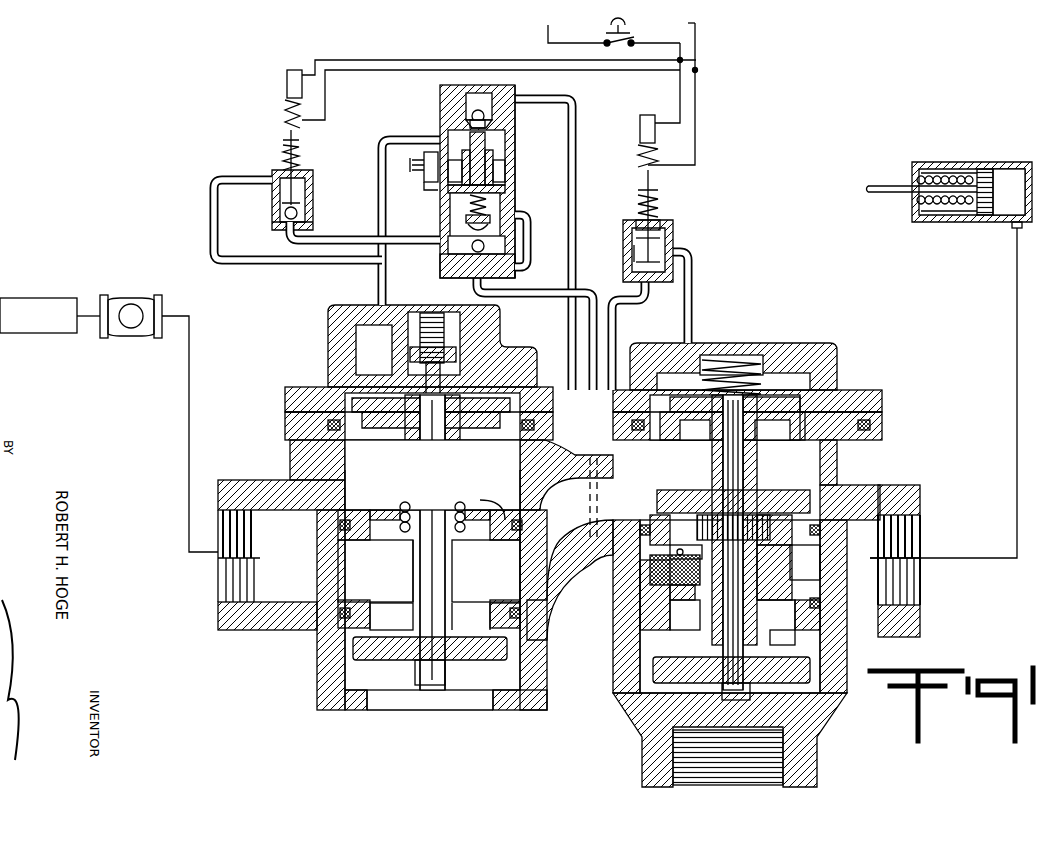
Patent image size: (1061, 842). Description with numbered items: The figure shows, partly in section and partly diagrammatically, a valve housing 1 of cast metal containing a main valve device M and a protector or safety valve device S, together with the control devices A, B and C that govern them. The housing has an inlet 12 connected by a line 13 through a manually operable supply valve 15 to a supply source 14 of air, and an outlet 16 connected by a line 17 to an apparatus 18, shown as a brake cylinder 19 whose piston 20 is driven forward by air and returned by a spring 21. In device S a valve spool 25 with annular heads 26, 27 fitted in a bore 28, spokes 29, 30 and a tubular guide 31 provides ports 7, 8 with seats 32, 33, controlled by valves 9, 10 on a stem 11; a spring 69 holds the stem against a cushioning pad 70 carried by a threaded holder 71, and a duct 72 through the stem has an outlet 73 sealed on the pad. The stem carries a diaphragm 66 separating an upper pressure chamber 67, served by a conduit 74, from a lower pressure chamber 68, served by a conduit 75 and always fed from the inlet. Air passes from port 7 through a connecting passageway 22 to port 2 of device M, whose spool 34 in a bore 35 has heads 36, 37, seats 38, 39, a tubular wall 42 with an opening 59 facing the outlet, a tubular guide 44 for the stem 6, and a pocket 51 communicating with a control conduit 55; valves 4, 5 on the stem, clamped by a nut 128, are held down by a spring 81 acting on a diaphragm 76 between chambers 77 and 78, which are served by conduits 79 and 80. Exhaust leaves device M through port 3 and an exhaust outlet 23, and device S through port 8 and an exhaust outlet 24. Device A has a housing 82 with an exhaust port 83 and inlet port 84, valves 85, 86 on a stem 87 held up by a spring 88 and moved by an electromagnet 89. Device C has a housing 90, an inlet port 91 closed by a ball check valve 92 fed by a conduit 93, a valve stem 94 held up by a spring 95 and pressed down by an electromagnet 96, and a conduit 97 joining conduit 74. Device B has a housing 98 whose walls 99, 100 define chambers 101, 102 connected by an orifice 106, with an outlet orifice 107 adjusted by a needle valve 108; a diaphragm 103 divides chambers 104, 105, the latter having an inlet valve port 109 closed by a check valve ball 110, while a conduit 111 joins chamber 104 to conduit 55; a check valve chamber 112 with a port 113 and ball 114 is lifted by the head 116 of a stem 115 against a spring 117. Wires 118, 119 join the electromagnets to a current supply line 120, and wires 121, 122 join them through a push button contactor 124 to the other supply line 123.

The valve housing 1 is at (592, 620).
The upper valve port 2 is at (743, 522).
The lower valve port 3 is at (780, 630).
The upper valve 4 is at (800, 495).
The lower valve 5 is at (775, 690).
The stem 6 is at (734, 542).
The upper port 7 is at (500, 512).
The lower port 8 is at (482, 612).
The upper valve 9 is at (500, 477).
The lower valve 10 is at (510, 660).
The stem 11 is at (430, 542).
The inlet 12 is at (232, 583).
The line 13 is at (188, 478).
The supply source 14 is at (50, 315).
The supply valve 15 is at (128, 300).
The outlet 16 is at (905, 582).
The line 17 is at (1017, 500).
The apparatus 18 is at (966, 222).
The brake cylinder 19 is at (1010, 170).
The piston 20 is at (985, 170).
The spring 21 is at (955, 170).
The connecting passageway 22 is at (590, 528).
The exhaust outlet 23 is at (773, 780).
The exhaust outlet 24 is at (480, 710).
The valve spool 25 is at (400, 561).
The annular head 26 is at (487, 556).
The annular head 27 is at (505, 605).
The bore 28 is at (343, 577).
The spokes 29 is at (483, 540).
The spokes 30 is at (468, 605).
The tubular guide 31 is at (410, 577).
The annular valve seat 32 is at (419, 517).
The annular valve seat 33 is at (372, 622).
The valve spool 34 is at (682, 587).
The bore 35 is at (675, 579).
The annular head 36 is at (807, 561).
The annular head 37 is at (815, 605).
The annular valve seat 38 is at (813, 518).
The annular valve seat 39 is at (665, 632).
The tubular wall 42 is at (705, 615).
The tubular guide 44 is at (774, 576).
The pocket 51 is at (652, 514).
The control conduit 55 is at (590, 536).
The opening 59 is at (828, 598).
The diaphragm 66 is at (505, 410).
The upper pressure chamber 67 is at (360, 355).
The lower pressure chamber 68 is at (310, 425).
The compression spring 69 is at (370, 500).
The cushioning pad 70 is at (409, 365).
The holder 71 is at (445, 338).
The duct 72 is at (408, 450).
The outlet 73 is at (402, 382).
The conduit 74 is at (378, 292).
The conduit 75 is at (565, 355).
The diaphragm 76 is at (845, 392).
The upper pressure chamber 77 is at (845, 360).
The lower pressure chamber 78 is at (878, 420).
The conduit 79 is at (690, 331).
The conduit 80 is at (616, 333).
The compression spring 81 is at (740, 365).
The walled housing 82 is at (675, 226).
The upper air exhaust port 83 is at (662, 218).
The lower air inlet port 84 is at (632, 268).
The valve 85 is at (632, 238).
The valve 86 is at (632, 252).
The stem 87 is at (672, 241).
The spring 88 is at (635, 205).
The electromagnet 89 is at (640, 130).
The walled housing 90 is at (275, 168).
The lower air inlet valve port 91 is at (272, 226).
The ball check valve 92 is at (275, 209).
The conduit 93 is at (329, 236).
The valve stem 94 is at (313, 183).
The spring 95 is at (300, 150).
The electromagnet 96 is at (287, 90).
The conduit 97 is at (322, 263).
The housing 98 is at (447, 84).
The transverse wall 99 is at (505, 155).
The transverse wall 100 is at (508, 188).
The chamber 101 is at (510, 132).
The chamber 102 is at (505, 165).
The diaphragm 103 is at (500, 233).
The upper pressure chamber 104 is at (505, 200).
The lower pressure chamber 105 is at (503, 246).
The orifice 106 is at (450, 123).
The outlet orifice 107 is at (435, 158).
The needle valve 108 is at (420, 185).
The inlet valve port 109 is at (442, 266).
The check valve ball 110 is at (445, 248).
The conduit 111 is at (530, 268).
The check valve chamber 112 is at (440, 95).
The port 113 is at (513, 117).
The check valve ball 114 is at (462, 110).
The stem 115 is at (505, 177).
The head 116 is at (507, 143).
The compression spring 117 is at (460, 208).
The wire 118 is at (327, 92).
The wire 119 is at (697, 97).
The current supply line 120 is at (697, 35).
The wire 121 is at (364, 59).
The wire 122 is at (678, 92).
The current supply line 123 is at (548, 33).
The contactor 124 is at (607, 46).
The nut 128 is at (748, 700).
The electromagnetic valve device A is at (698, 210).
The air operated valve device B is at (522, 89).
The electromagnetic valve device C is at (312, 176).
The protector or safety valve device S is at (305, 654).
The main valve device M is at (606, 662).